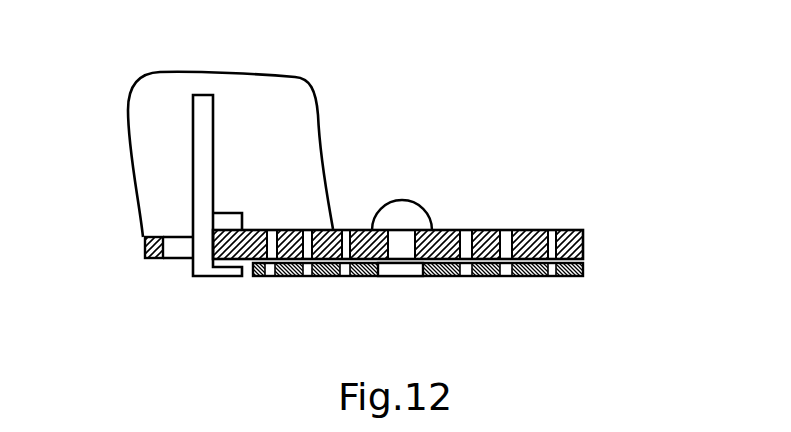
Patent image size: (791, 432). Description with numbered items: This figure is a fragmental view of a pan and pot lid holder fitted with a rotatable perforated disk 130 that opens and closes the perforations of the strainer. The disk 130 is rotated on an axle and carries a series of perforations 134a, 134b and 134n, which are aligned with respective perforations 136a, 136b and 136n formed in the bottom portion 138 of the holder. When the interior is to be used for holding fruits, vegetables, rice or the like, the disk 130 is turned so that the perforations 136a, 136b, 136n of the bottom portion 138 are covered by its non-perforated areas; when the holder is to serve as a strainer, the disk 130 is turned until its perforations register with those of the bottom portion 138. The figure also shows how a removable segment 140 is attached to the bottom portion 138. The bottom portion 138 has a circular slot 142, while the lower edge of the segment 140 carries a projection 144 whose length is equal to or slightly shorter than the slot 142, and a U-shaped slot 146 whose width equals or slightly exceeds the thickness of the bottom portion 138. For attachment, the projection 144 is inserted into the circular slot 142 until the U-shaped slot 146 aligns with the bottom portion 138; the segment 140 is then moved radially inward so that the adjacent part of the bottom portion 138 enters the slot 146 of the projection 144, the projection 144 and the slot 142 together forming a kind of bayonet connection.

The rotatable perforated disk 130 is at (456, 317).
The perforation of the disk 134a is at (268, 277).
The perforation of the disk 134b is at (343, 278).
The perforation of the disk 134n is at (552, 278).
The perforation of the bottom portion 136a is at (273, 228).
The perforation of the bottom portion 136b is at (306, 228).
The perforation of the bottom portion 136n is at (551, 240).
The bottom portion 138 is at (445, 156).
The removable segment 140 is at (116, 179).
The circular slot 142 is at (183, 250).
The projection 144 is at (212, 277).
The U-shaped slot 146 is at (237, 228).